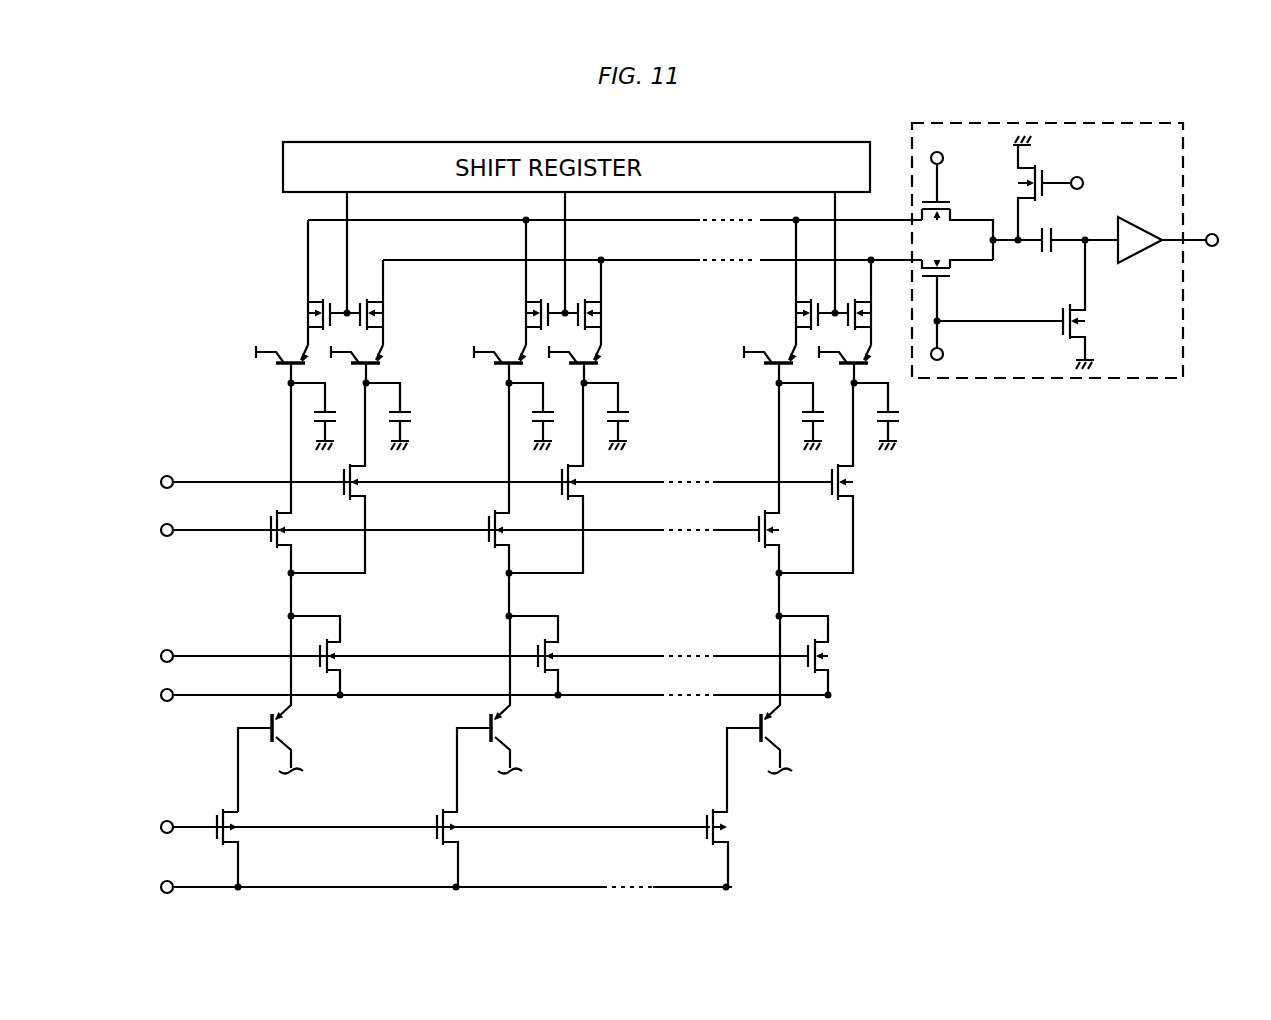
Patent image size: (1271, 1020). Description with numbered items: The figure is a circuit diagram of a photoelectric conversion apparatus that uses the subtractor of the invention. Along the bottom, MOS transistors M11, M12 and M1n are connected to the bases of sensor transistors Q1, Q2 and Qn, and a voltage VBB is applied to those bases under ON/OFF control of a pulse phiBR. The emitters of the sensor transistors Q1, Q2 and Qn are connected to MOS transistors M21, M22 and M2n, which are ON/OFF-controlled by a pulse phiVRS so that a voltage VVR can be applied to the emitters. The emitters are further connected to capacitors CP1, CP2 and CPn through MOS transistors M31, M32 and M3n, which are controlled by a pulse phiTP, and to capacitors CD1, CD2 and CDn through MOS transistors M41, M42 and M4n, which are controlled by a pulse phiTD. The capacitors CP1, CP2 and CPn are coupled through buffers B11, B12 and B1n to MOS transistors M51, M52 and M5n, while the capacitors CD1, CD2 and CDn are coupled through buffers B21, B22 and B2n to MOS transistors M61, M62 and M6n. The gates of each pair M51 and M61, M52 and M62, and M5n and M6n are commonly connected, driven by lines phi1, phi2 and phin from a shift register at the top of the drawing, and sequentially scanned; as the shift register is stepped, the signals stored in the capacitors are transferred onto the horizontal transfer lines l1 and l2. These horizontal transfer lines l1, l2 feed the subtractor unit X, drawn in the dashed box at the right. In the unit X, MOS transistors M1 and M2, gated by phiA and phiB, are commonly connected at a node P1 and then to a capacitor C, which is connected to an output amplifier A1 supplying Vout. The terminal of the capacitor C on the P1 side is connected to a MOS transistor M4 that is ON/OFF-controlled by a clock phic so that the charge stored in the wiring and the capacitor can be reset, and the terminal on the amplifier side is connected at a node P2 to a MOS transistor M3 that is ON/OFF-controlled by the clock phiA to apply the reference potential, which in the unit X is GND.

The MOS transistor M51 is at (306, 282).
The MOS transistor M61 is at (387, 302).
The MOS transistor M52 is at (521, 282).
The MOS transistor M62 is at (605, 302).
The MOS transistor M5n is at (792, 282).
The MOS transistor M6n is at (876, 302).
The buffer B11 is at (282, 350).
The buffer B21 is at (380, 362).
The buffer B12 is at (500, 350).
The buffer B22 is at (598, 362).
The buffer B1n is at (769, 350).
The buffer B2n is at (868, 362).
The capacitor CP1 is at (329, 416).
The capacitor CD1 is at (406, 416).
The capacitor CP2 is at (547, 416).
The capacitor CD2 is at (624, 416).
The capacitor CPn is at (817, 416).
The capacitor CDn is at (894, 416).
The MOS transistor M41 is at (353, 478).
The MOS transistor M42 is at (572, 478).
The MOS transistor M4n is at (842, 478).
The MOS transistor M31 is at (304, 499).
The MOS transistor M32 is at (522, 499).
The MOS transistor M3n is at (794, 499).
The MOS transistor M21 is at (339, 655).
The MOS transistor M22 is at (558, 655).
The MOS transistor M2n is at (828, 655).
The sensor transistor Q1 is at (282, 714).
The sensor transistor Q2 is at (500, 714).
The sensor transistor Qn is at (771, 714).
The MOS transistor M11 is at (251, 838).
The MOS transistor M12 is at (471, 838).
The MOS transistor M1n is at (743, 838).
The MOS transistor M1 is at (957, 304).
The MOS transistor M2 is at (957, 212).
The MOS transistor M3 is at (1031, 304).
The MOS transistor M4 is at (1045, 188).
The capacitor C is at (1080, 249).
The output amplifier A1 is at (1142, 230).
The node P1 is at (1017, 256).
The node P2 is at (1085, 221).
The subtractor unit X is at (1183, 150).
The horizontal transfer line l1 is at (652, 249).
The horizontal transfer line l2 is at (615, 210).
The clock signal phi1 is at (361, 252).
The clock signal phi2 is at (579, 252).
The clock signal phin is at (850, 252).
The pulse phiTD is at (131, 482).
The pulse phiTP is at (130, 530).
The pulse phiVRS is at (123, 657).
The voltage VVR is at (129, 697).
The pulse phiBR is at (128, 827).
The voltage VBB is at (129, 887).
The control pulse phiB is at (937, 145).
The clock phiA is at (952, 354).
The clock phic is at (1091, 185).
The output voltage Vout is at (1236, 242).